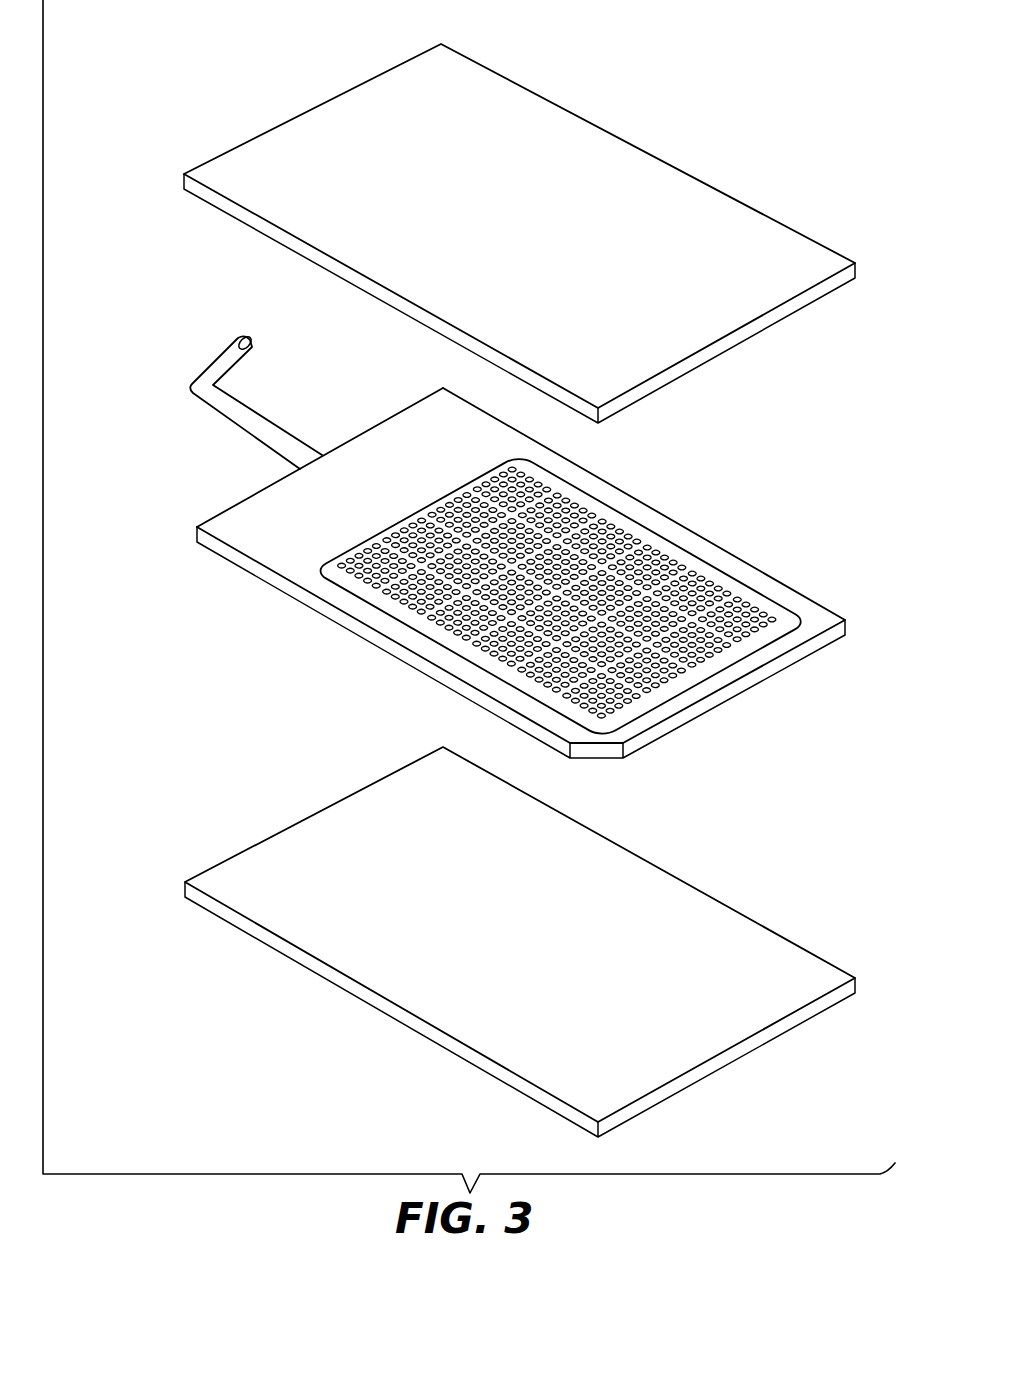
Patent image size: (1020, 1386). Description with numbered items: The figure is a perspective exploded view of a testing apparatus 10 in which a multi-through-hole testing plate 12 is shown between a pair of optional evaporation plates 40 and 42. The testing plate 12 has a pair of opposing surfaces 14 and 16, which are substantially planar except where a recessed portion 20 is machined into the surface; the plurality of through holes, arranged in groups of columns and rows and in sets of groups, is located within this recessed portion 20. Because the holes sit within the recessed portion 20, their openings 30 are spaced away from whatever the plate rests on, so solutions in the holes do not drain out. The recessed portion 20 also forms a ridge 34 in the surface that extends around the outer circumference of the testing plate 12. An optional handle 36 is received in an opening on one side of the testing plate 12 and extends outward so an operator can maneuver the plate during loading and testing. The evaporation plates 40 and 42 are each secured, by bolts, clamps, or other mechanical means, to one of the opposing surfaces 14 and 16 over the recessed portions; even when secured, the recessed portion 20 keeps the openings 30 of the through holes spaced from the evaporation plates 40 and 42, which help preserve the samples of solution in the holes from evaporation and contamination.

The testing apparatus 10 is at (218, 697).
The testing plate 12 is at (287, 568).
The opposing surface 14 is at (255, 512).
The opposing surface 16 is at (225, 555).
The recessed portion 20 is at (608, 515).
The opening 30 is at (396, 625).
The ridge 34 is at (742, 570).
The handle 36 is at (233, 412).
The evaporation plate 40 is at (598, 148).
The evaporation plate 42 is at (600, 860).